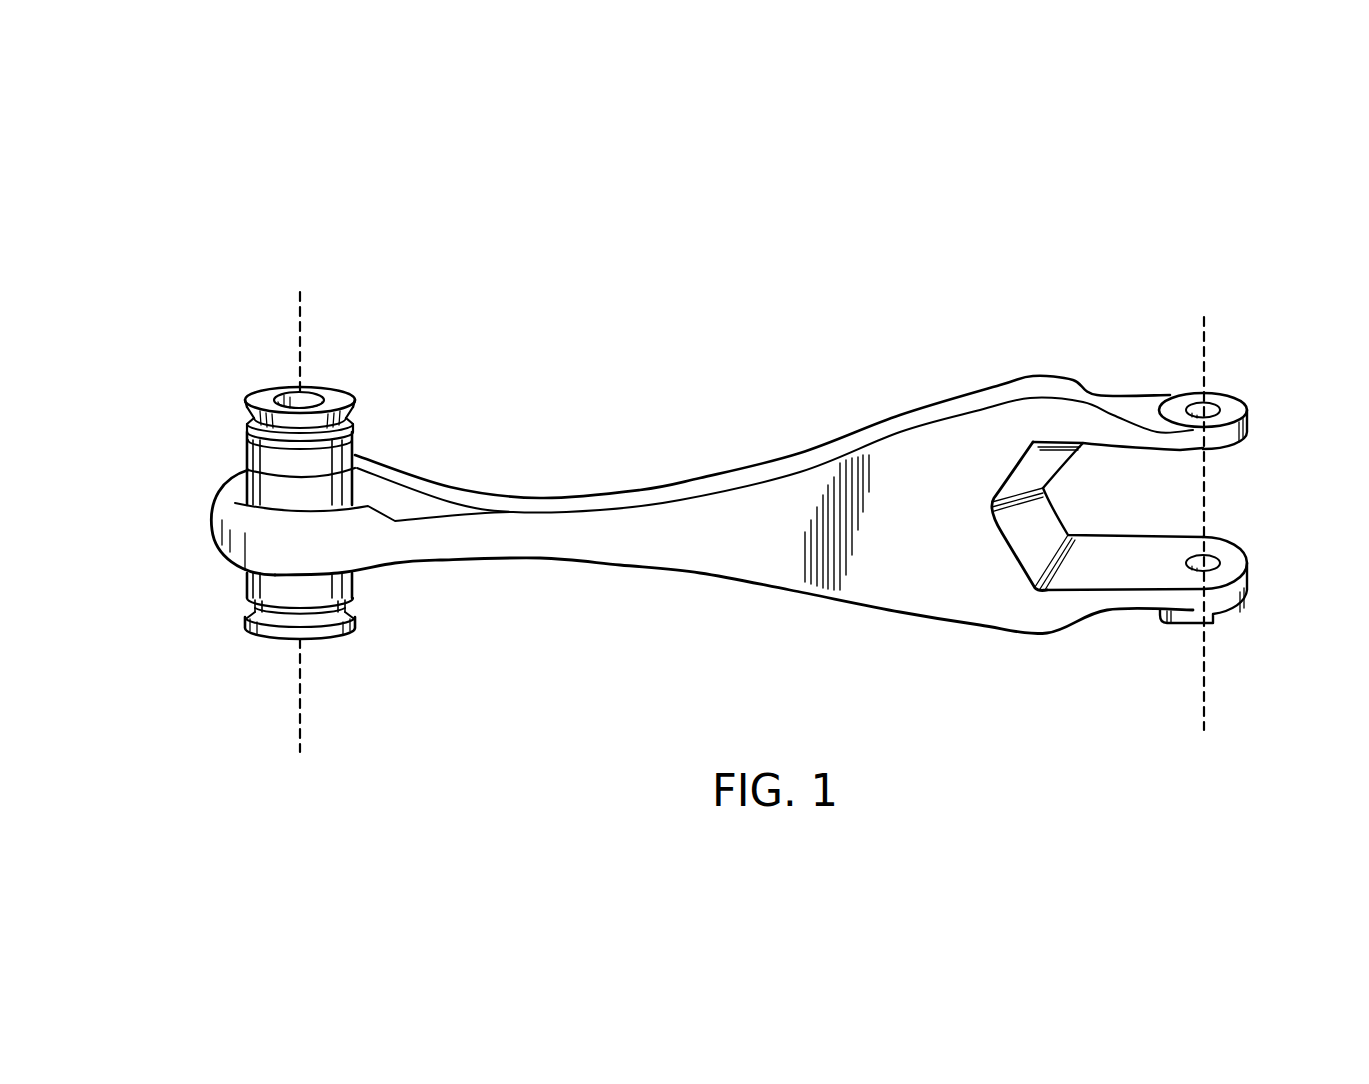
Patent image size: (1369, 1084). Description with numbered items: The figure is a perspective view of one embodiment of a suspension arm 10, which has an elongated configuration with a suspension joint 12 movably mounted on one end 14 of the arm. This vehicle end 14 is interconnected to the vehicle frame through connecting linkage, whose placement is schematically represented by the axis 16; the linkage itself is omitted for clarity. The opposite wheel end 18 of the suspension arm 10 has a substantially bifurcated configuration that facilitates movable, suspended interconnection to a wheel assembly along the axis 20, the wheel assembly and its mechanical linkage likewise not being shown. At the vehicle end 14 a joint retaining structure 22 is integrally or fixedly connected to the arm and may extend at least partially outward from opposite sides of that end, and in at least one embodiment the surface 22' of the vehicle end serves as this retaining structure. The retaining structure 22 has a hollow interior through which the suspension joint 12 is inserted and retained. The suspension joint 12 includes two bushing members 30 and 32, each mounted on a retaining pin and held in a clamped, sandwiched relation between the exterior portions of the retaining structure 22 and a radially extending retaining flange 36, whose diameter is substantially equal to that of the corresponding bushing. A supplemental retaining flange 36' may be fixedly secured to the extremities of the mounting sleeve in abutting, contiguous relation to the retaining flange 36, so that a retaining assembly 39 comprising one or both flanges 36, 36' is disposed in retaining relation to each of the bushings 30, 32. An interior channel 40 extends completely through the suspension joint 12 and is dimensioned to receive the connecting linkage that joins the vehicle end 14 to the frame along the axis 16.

The suspension arm 10 is at (647, 437).
The suspension joint 12 is at (294, 503).
The vehicle end 14 is at (620, 505).
The axis 16 is at (297, 308).
The wheel end 18 is at (1060, 358).
The axis 20 is at (1205, 345).
The joint retaining structure 22 is at (714, 505).
The surface 22' is at (201, 522).
The bushing member 30 is at (247, 457).
The bushing member 32 is at (242, 582).
The retaining flange 36 is at (386, 528).
The supplemental retaining flange 36' is at (351, 501).
The retaining assembly 39 is at (240, 405).
The interior channel 40 is at (285, 400).